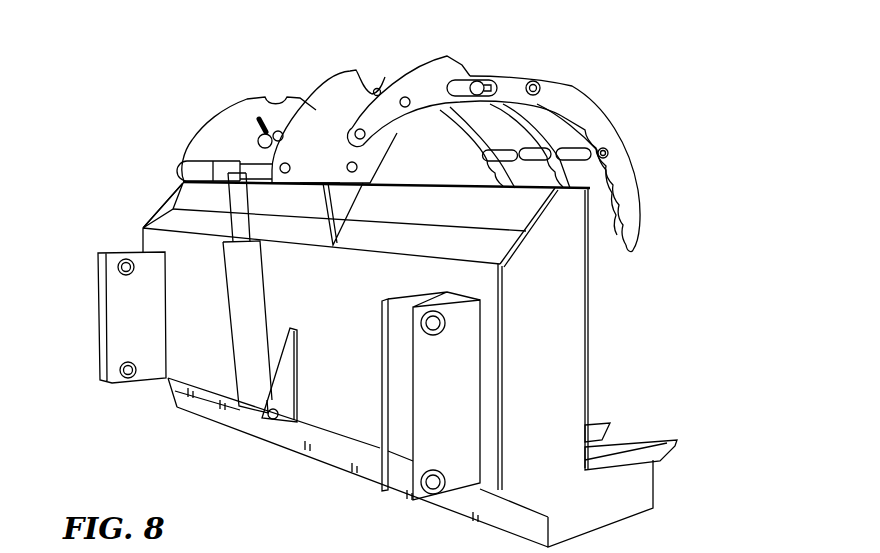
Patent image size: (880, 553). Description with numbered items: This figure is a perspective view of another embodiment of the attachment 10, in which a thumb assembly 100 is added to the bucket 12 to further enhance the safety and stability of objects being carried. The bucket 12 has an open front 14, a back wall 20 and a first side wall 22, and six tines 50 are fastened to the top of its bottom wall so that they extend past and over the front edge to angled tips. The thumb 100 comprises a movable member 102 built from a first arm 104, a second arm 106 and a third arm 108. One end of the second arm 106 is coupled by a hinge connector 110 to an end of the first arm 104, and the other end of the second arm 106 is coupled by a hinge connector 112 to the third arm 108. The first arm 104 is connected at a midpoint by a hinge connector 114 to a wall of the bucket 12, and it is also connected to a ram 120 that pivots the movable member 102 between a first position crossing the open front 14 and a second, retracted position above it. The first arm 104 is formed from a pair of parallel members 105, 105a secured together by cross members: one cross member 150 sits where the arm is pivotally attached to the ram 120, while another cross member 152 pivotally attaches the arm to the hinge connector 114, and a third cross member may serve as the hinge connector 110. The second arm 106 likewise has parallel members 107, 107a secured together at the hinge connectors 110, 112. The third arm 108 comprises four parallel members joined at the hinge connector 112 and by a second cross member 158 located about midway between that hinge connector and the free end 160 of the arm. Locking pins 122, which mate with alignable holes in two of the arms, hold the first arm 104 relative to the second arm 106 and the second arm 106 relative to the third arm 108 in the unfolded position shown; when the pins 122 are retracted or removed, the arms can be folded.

The attachment 10 is at (227, 465).
The bucket 12 is at (302, 476).
The open front 14 is at (633, 359).
The back wall 20 is at (381, 216).
The first side wall 22 is at (471, 344).
The tines 50 is at (657, 457).
The thumb assembly 100 is at (406, 155).
The movable member 102 is at (619, 155).
The first arm 104 is at (192, 168).
The parallel member 105 is at (217, 137).
The parallel member 105a is at (320, 170).
The second arm 106 is at (415, 119).
The parallel member 107 is at (320, 87).
The parallel member 107a is at (437, 70).
The third arm 108 is at (623, 170).
The hinge connector 110 is at (407, 108).
The hinge connector 112 is at (533, 81).
The hinge connector 114 is at (347, 230).
The ram 120 is at (245, 303).
The locking pins 122 is at (258, 118).
The cross member 150 is at (202, 170).
The cross member 152 is at (362, 173).
The cross member 158 is at (573, 153).
The free end 160 is at (640, 247).